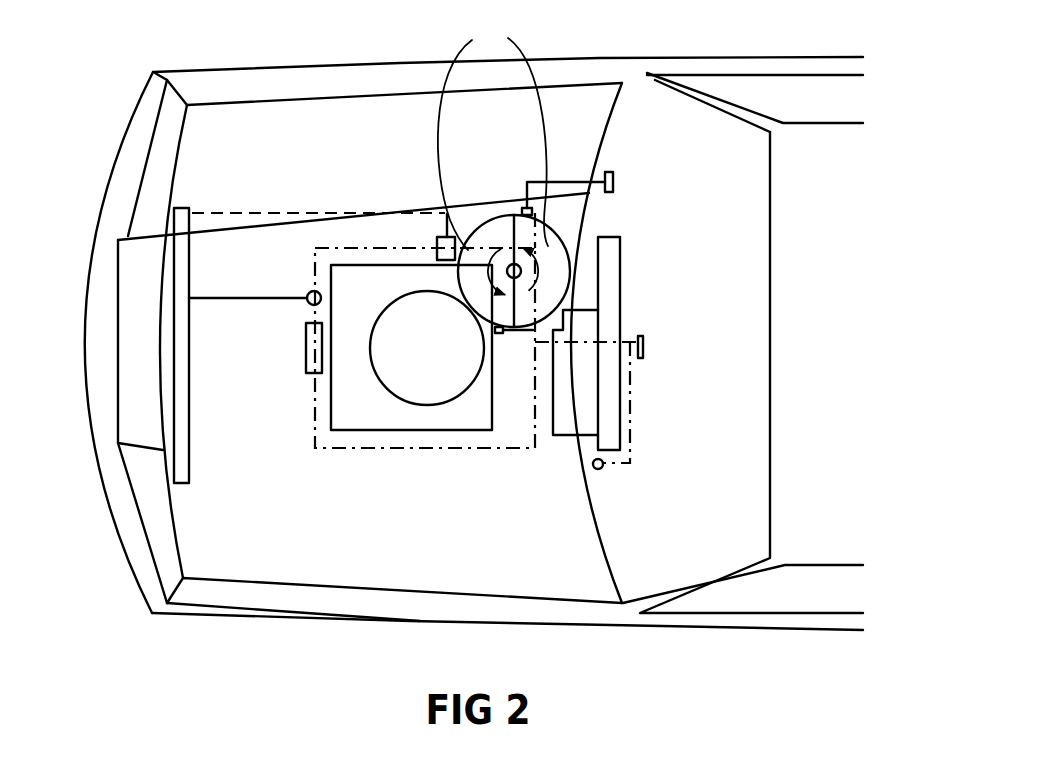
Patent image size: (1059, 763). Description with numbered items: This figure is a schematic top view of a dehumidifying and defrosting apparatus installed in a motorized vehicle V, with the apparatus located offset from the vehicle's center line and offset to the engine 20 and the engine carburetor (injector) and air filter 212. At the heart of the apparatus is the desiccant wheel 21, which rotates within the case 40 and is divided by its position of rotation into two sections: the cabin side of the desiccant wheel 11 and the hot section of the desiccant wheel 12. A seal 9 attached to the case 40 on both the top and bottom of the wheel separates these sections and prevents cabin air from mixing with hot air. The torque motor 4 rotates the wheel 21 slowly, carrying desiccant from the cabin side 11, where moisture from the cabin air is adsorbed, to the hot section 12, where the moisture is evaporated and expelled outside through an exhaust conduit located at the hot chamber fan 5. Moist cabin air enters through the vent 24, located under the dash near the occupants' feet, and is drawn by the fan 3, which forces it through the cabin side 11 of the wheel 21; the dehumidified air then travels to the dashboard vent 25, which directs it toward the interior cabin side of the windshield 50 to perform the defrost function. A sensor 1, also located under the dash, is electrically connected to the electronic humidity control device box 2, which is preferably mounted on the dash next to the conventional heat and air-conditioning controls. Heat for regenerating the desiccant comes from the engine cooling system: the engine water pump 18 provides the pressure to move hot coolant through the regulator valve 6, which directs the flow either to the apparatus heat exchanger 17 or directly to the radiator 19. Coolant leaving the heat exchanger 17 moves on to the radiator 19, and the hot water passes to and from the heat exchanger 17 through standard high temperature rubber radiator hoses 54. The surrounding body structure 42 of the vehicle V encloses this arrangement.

The sensor 1 is at (603, 469).
The electronic humidity control device box 2 is at (680, 341).
The fan 3 is at (522, 210).
The torque motor 4 is at (652, 307).
The hot chamber fan 5 is at (500, 334).
The regulator valve 6 is at (308, 292).
The seal 9 is at (511, 234).
The cabin side of the desiccant wheel 11 is at (549, 238).
The hot section of the desiccant wheel 12 is at (478, 257).
The heat exchanger 17 is at (440, 237).
The engine water pump 18 is at (305, 346).
The radiator 19 is at (174, 218).
The engine 20 is at (346, 432).
The desiccant wheel 21 is at (493, 132).
The vent 24 is at (668, 157).
The dashboard vent 25 is at (655, 229).
The case 40 is at (665, 272).
The vehicle body 42 is at (788, 593).
The windshield 50 is at (647, 556).
The radiator hoses 54 is at (353, 247).
The engine carburetor and air filter 212 is at (407, 372).
The motorized vehicle V is at (312, 624).